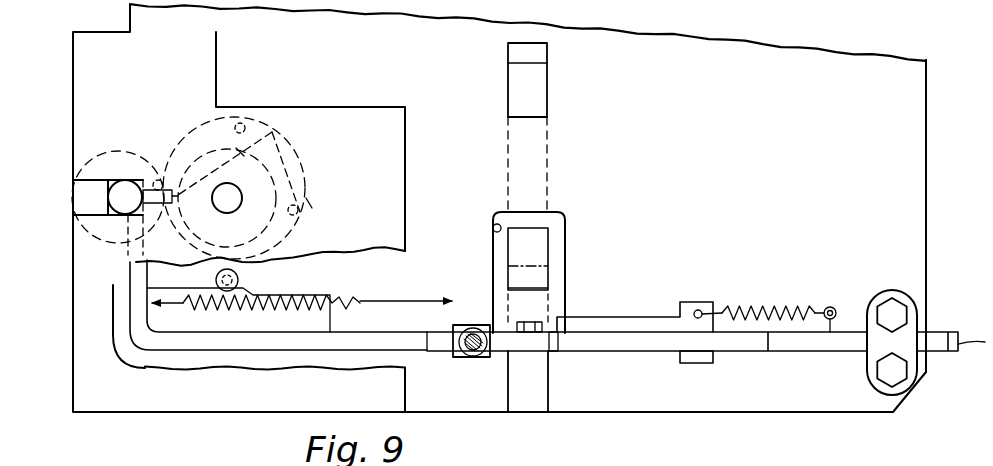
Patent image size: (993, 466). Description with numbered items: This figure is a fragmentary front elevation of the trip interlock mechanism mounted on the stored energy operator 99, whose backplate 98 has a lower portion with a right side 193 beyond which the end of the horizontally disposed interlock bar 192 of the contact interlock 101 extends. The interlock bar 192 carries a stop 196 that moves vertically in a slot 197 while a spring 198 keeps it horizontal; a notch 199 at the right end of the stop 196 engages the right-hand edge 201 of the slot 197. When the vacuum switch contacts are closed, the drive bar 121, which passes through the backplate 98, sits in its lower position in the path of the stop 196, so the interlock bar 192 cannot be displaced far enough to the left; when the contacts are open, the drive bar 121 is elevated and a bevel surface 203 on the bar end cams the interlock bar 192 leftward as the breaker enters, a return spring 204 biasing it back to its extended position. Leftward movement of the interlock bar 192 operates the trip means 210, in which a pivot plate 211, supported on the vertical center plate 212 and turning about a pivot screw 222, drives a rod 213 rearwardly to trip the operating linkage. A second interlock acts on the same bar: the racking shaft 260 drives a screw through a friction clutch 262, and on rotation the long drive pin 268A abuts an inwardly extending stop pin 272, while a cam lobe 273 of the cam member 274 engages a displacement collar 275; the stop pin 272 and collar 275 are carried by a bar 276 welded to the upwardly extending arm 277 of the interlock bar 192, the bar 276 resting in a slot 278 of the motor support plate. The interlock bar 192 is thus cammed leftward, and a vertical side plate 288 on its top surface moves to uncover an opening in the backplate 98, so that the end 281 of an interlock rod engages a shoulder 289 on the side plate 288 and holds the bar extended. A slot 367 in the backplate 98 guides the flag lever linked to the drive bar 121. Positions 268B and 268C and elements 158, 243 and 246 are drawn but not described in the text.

The stored energy operator 99 is at (659, 52).
The backplate 98 is at (778, 55).
The right side of backplate lower portion 193 is at (930, 130).
The friction clutch 262 is at (352, 145).
The shaft 260 is at (242, 198).
The stop pin 272 is at (180, 193).
The cam member 274 is at (292, 152).
The cam lobe 273 is at (309, 204).
The long drive pin 268A is at (299, 211).
The cam position B 268B is at (239, 123).
The cam position C 268C is at (156, 179).
The displacement collar 275 is at (118, 151).
The bar 276 is at (124, 171).
The slot 278 is at (93, 213).
The right end of interlock rod 281 is at (238, 282).
The shoulder 289 is at (250, 290).
The vertical side plate 288 is at (332, 326).
The return spring 204 is at (353, 298).
The upwardly extending arm 277 is at (128, 310).
The interlock bar 192 is at (348, 355).
The pin 158 is at (550, 146).
The drive bar 121 is at (546, 305).
The slot 367 is at (496, 225).
The pivot screw 222 is at (520, 320).
The contact interlock 101 is at (822, 396).
The rod 213 is at (461, 357).
The trip means 210 is at (490, 360).
The slot 197 is at (553, 340).
The pivot plate 211 is at (538, 345).
The vertical center plate 212 is at (532, 405).
The stop 196 is at (632, 318).
The spring 198 is at (790, 310).
The notch 199 is at (720, 351).
The right-hand edge of slot 201 is at (690, 343).
The bevel surface 203 is at (948, 335).
The element 243 is at (968, 211).
The element 246 is at (968, 266).